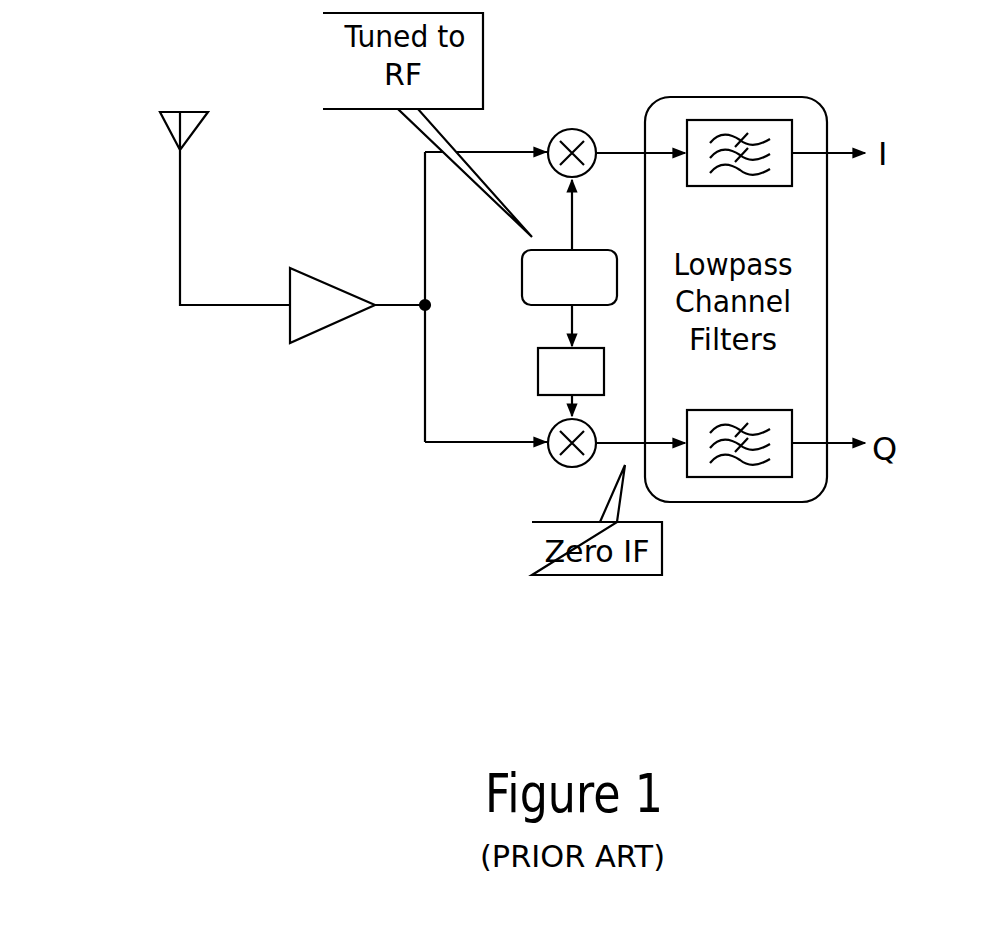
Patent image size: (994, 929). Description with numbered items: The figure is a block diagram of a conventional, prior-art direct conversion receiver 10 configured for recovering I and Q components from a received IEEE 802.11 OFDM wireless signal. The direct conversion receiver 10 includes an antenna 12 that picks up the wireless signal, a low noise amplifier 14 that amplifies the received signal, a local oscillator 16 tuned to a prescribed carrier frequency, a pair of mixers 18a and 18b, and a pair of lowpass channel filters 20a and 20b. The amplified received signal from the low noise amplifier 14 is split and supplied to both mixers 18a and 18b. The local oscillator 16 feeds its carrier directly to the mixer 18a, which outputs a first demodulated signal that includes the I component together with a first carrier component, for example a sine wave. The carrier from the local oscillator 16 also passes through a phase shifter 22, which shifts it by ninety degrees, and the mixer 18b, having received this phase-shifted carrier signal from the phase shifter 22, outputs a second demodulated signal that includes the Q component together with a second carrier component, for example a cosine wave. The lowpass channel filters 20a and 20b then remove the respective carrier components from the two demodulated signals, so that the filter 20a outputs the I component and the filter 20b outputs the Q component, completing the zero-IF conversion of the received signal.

The direct conversion receiver 10 is at (283, 577).
The antenna 12 is at (153, 145).
The low noise amplifier 14 is at (320, 292).
The local oscillator 16 is at (522, 283).
The mixer 18a is at (574, 130).
The mixer 18b is at (548, 462).
The lowpass channel filter 20a is at (732, 104).
The lowpass channel filter 20b is at (735, 470).
The phase shifter 22 is at (538, 368).